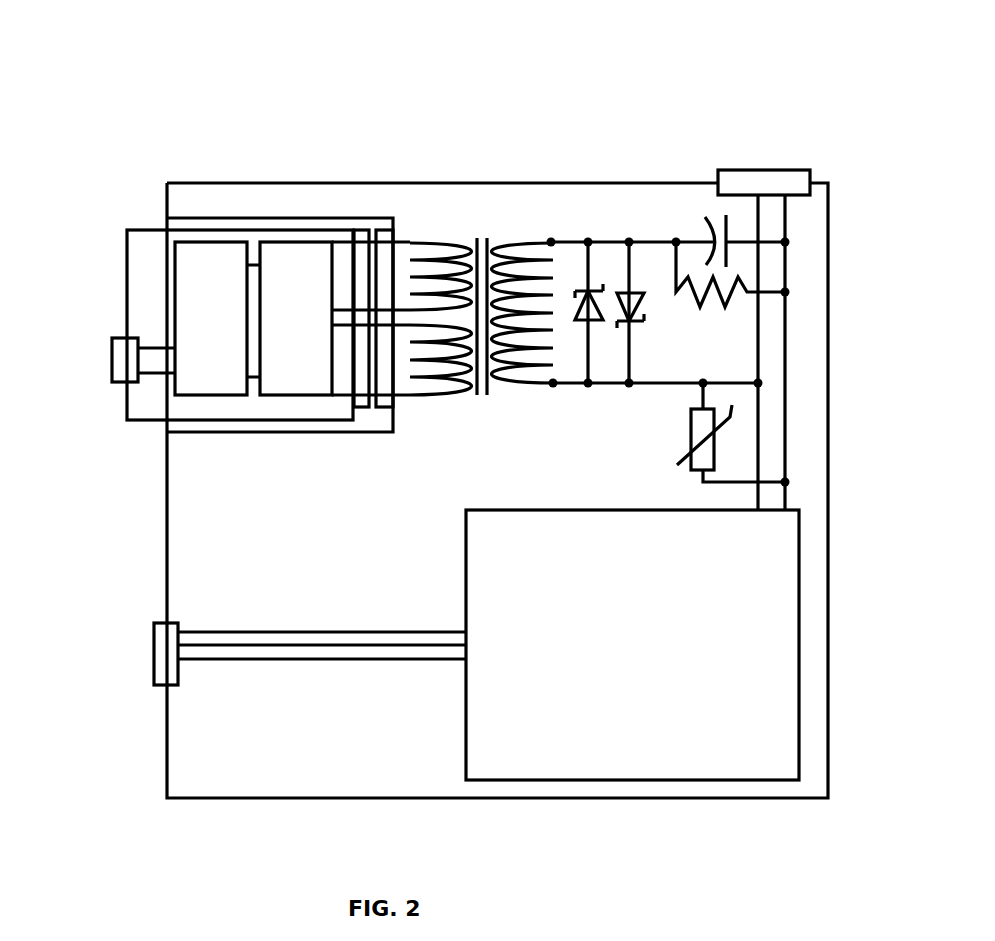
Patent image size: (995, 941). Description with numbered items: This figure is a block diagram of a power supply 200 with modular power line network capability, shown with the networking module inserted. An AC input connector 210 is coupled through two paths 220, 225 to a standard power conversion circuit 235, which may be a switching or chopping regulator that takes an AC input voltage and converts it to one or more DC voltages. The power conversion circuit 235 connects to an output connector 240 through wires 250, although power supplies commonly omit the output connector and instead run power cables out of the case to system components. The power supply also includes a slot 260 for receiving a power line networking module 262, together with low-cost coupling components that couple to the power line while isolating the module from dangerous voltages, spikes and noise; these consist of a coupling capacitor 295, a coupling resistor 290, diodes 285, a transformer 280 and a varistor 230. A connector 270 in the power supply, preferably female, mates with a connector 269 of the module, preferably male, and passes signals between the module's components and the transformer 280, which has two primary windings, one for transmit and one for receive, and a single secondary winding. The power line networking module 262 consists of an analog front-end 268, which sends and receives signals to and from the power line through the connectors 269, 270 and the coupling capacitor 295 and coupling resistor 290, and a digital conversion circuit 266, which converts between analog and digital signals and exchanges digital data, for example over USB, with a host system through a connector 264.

The power supply 200 is at (185, 109).
The AC input connector 210 is at (775, 168).
The path 220 is at (758, 358).
The path 225 is at (788, 377).
The varistor 230 is at (718, 450).
The power conversion circuit 235 is at (758, 573).
The output connector 240 is at (154, 652).
The wires 250 is at (353, 627).
The slot 260 is at (165, 428).
The power line networking module 262 is at (124, 262).
The connector 264 is at (110, 348).
The digital conversion circuit 266 is at (207, 238).
The analog front-end 268 is at (295, 238).
The connector 269 is at (362, 230).
The connector 270 is at (385, 230).
The transformer 280 is at (478, 236).
The diodes 285 is at (622, 283).
The coupling resistor 290 is at (697, 275).
The coupling capacitor 295 is at (717, 214).